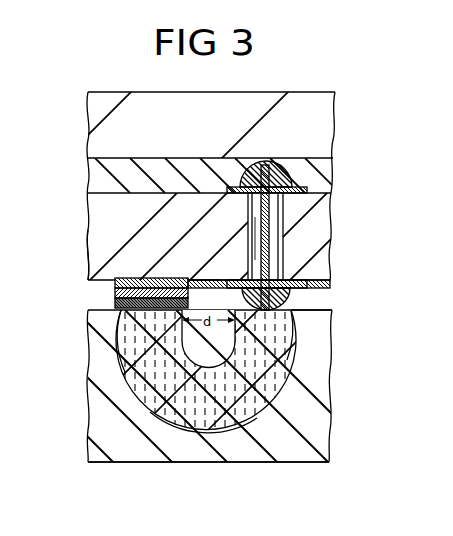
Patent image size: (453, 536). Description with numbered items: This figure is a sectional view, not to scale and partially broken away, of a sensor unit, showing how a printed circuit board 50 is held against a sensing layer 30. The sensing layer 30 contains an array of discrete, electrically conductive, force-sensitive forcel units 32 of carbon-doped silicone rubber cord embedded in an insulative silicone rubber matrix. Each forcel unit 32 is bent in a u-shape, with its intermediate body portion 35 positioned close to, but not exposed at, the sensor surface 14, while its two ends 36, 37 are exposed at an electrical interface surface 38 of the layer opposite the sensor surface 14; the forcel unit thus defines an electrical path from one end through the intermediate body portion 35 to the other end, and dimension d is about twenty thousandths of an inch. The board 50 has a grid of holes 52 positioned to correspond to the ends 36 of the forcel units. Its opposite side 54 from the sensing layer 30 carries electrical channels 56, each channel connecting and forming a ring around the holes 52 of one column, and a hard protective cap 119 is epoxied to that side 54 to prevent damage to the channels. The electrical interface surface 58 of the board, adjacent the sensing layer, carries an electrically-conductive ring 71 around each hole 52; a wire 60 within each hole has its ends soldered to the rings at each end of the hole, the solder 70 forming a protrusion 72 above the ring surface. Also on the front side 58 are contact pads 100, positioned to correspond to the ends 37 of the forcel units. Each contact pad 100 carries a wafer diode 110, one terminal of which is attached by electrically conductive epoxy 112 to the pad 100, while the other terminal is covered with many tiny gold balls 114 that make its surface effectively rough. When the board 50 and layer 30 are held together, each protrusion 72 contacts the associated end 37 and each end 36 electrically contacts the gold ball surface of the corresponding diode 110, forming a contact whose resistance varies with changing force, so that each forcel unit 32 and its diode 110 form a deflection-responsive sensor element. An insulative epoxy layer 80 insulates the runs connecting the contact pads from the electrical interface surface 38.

The hard protective cap 119 is at (124, 92).
The opposite side of board 54 is at (168, 184).
The protrusion 72 is at (273, 156).
The solder 70 is at (287, 173).
The electrical channel 56 is at (307, 190).
The hole 52 is at (283, 213).
The wire 60 is at (270, 231).
The electrically-conductive ring 71 is at (313, 280).
The insulative epoxy layer 80 is at (331, 286).
The electrical interface surface 38 is at (313, 311).
The end of forcel unit 36 is at (300, 333).
The printed circuit board 50 is at (88, 213).
The contact pad 100 is at (88, 245).
The electrically conductive epoxy 112 is at (113, 288).
The wafer diode 110 is at (112, 300).
The gold balls 114 is at (113, 311).
The electrical interface surface of board 58 is at (203, 272).
The end of forcel unit 37 is at (103, 323).
The sensing layer 30 is at (84, 425).
The sensor surface 14 is at (102, 471).
The forcel unit 32 is at (178, 437).
The intermediate body portion 35 is at (222, 424).